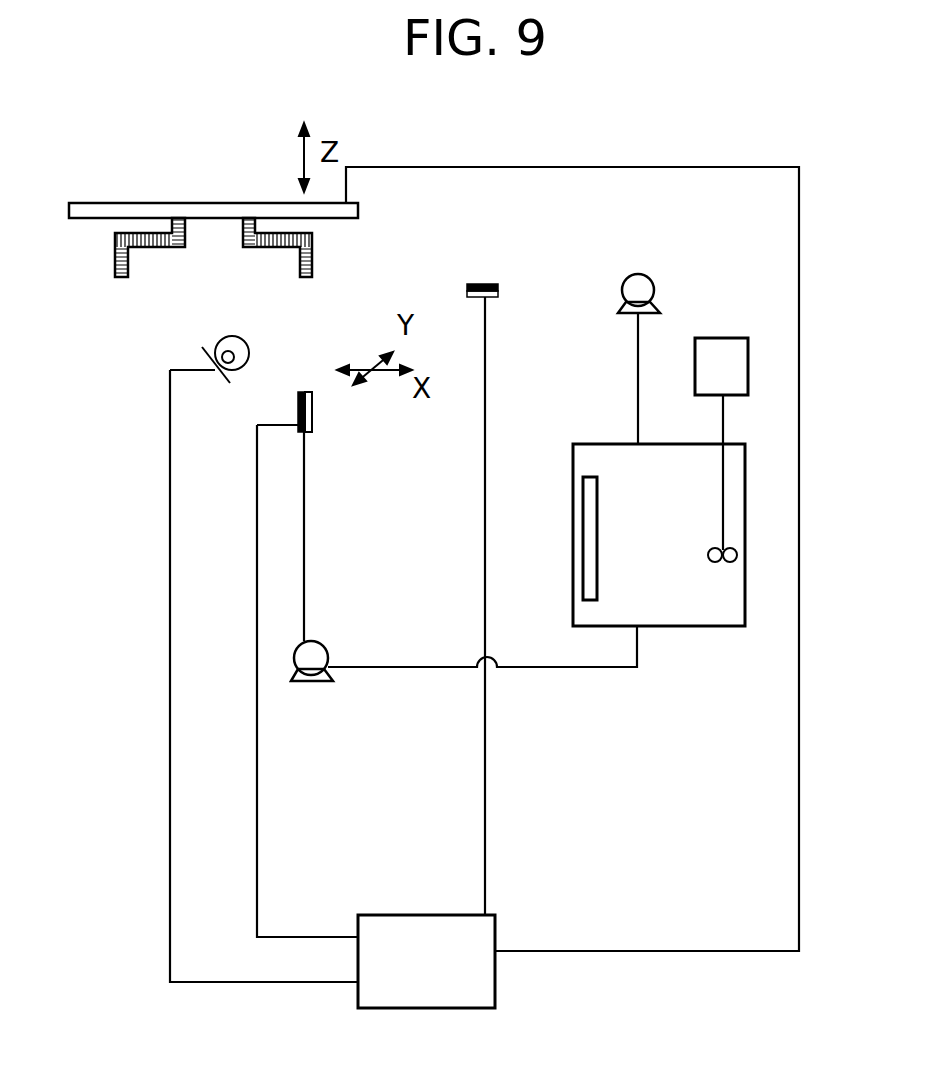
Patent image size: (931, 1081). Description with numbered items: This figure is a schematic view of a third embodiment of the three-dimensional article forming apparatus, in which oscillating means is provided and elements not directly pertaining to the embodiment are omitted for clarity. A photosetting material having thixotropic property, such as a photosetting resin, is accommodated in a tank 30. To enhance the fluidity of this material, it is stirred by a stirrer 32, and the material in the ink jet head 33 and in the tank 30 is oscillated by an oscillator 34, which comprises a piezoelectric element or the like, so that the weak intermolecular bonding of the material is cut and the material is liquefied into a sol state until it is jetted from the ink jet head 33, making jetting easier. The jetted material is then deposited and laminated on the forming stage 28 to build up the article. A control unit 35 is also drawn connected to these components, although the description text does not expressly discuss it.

The forming stage 28 is at (188, 203).
The tank 30 is at (598, 450).
The stirrer 32 is at (717, 345).
The ink jet head 33 is at (298, 405).
The oscillator 34 is at (312, 410).
The control unit 35 is at (421, 915).